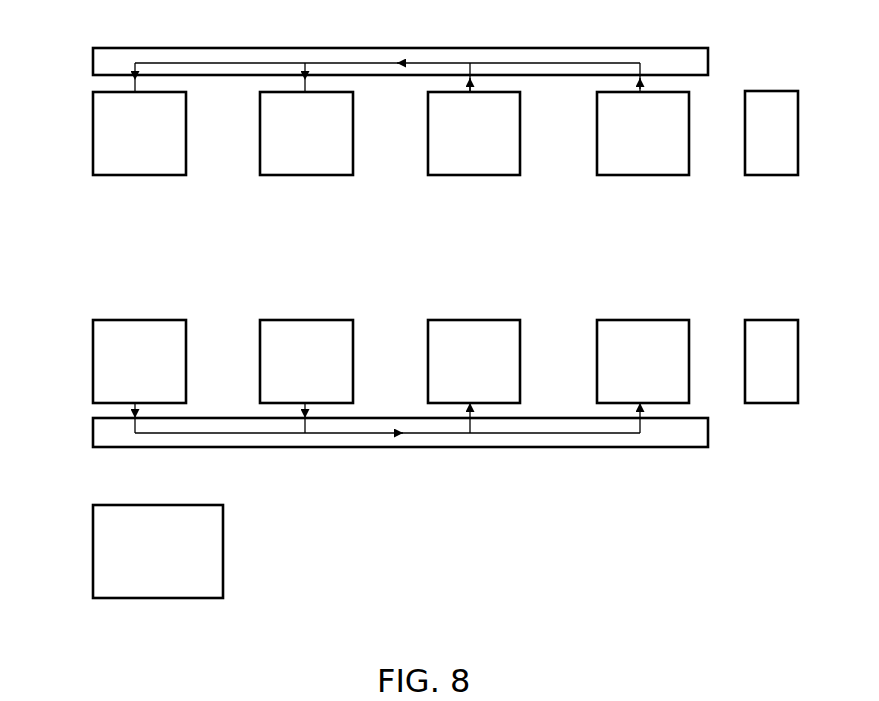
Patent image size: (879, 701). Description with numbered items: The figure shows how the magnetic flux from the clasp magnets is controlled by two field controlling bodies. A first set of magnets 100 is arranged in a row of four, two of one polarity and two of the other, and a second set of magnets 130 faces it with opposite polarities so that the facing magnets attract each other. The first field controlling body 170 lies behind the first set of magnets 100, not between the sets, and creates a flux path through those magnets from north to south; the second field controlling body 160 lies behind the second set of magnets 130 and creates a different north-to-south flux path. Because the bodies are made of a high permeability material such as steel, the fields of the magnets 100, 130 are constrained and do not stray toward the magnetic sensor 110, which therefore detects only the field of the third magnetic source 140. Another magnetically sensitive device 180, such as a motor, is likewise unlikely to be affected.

The first set of magnets 100 is at (140, 175).
The magnetic sensor 110 is at (777, 91).
The second set of magnets 130 is at (140, 320).
The third magnetic source 140 is at (783, 403).
The second field controlling body 160 is at (93, 436).
The first field controlling body 170 is at (93, 66).
The magnetically sensitive device 180 is at (140, 598).